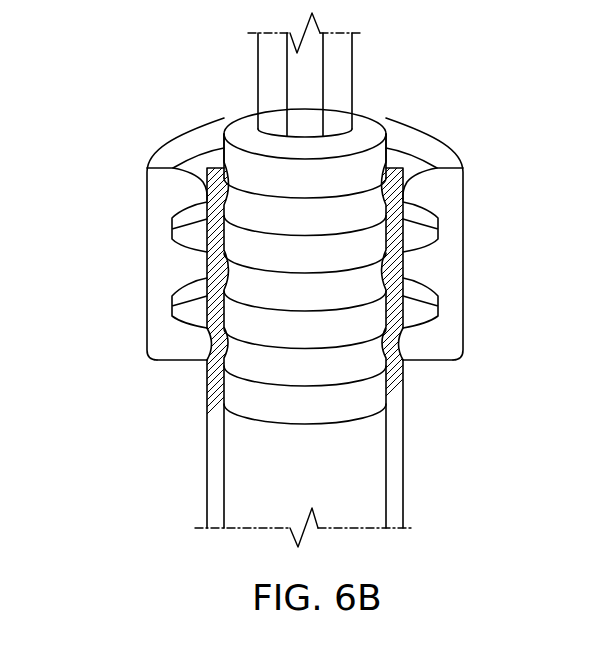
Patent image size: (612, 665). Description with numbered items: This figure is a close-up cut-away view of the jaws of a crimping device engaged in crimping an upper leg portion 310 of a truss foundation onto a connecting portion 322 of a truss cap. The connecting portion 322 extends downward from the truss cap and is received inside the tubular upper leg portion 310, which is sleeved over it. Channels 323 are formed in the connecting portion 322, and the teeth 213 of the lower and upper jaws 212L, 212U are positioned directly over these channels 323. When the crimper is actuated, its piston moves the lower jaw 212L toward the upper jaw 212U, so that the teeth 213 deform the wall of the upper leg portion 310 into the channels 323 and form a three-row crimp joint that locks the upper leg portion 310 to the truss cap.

The lower jaw 212L is at (153, 144).
The upper jaw 212U is at (462, 158).
The teeth 213 is at (208, 362).
The upper leg portion 310 is at (400, 503).
The connecting portion 322 is at (337, 172).
The channels 323 is at (323, 367).